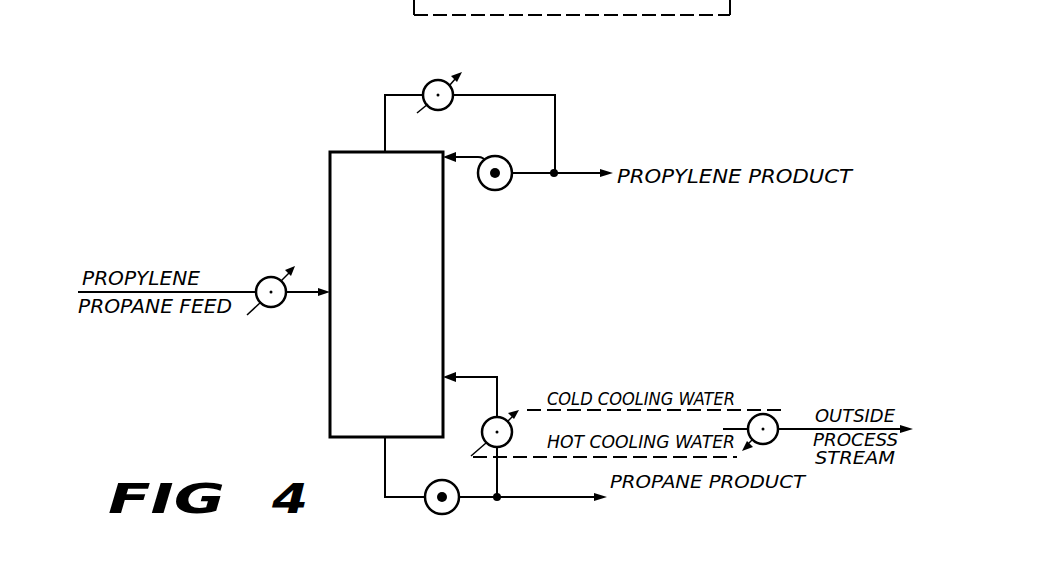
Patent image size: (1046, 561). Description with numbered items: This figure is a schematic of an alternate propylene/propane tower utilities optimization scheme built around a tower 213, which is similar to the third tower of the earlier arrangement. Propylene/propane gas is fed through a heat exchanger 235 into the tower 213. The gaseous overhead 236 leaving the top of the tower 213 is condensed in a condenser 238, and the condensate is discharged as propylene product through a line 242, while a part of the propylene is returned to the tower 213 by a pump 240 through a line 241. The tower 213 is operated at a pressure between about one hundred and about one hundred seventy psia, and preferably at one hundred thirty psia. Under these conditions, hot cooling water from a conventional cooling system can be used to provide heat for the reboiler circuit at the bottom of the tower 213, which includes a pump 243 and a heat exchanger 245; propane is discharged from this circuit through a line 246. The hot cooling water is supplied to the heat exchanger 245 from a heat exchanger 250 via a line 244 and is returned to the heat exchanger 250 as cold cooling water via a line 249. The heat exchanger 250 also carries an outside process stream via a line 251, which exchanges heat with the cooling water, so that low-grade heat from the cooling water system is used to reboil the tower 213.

The tower 213 is at (406, 297).
The heat exchanger 235 is at (274, 307).
The gaseous overhead 236 is at (385, 125).
The condenser 238 is at (441, 80).
The pump 240 is at (505, 186).
The line 241 is at (468, 153).
The line 242 is at (576, 176).
The pump 243 is at (452, 510).
The line 244 is at (519, 458).
The heat exchanger 245 is at (489, 418).
The line 246 is at (532, 481).
The line 249 is at (528, 408).
The heat exchanger 250 is at (774, 418).
The line 251 is at (733, 425).